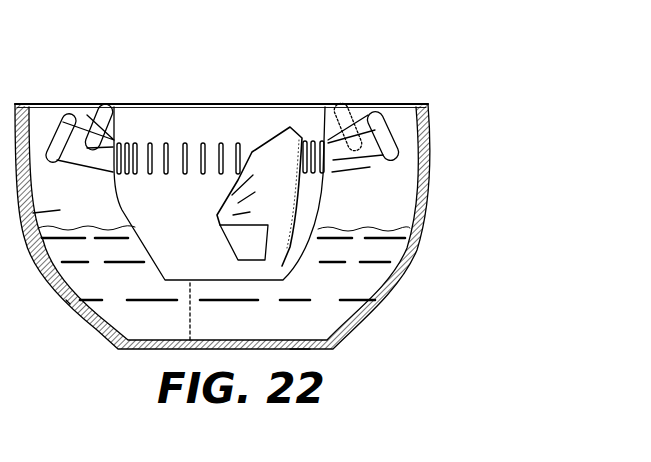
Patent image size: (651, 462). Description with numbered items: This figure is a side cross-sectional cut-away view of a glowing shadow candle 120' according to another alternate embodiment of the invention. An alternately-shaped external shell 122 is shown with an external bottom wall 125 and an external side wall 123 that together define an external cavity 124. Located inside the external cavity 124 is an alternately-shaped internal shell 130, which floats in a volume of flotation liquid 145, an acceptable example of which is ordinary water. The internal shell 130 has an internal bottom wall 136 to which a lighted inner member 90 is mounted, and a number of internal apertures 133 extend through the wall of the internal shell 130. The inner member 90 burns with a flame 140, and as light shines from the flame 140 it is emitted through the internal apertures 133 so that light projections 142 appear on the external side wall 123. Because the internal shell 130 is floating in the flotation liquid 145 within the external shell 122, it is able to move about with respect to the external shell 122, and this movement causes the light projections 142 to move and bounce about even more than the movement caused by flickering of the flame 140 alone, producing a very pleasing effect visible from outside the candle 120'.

The glowing shadow candle 120' is at (74, 58).
The external shell 122 is at (428, 113).
The external side wall 123 is at (70, 308).
The external cavity 124 is at (33, 213).
The external bottom wall 125 is at (300, 350).
The internal shell 130 is at (235, 110).
The internal apertures 133 is at (168, 160).
The internal bottom wall 136 is at (190, 284).
The flame 140 is at (268, 200).
The light projections 142 is at (380, 100).
The flotation liquid 145 is at (373, 277).
The lighted inner member 90 is at (250, 238).